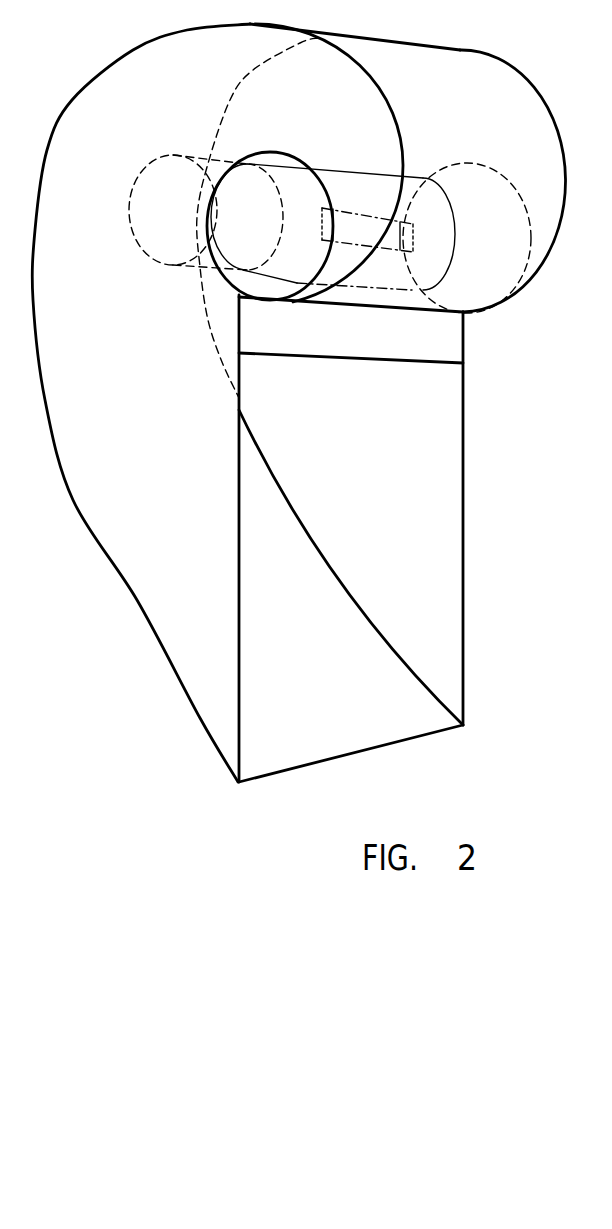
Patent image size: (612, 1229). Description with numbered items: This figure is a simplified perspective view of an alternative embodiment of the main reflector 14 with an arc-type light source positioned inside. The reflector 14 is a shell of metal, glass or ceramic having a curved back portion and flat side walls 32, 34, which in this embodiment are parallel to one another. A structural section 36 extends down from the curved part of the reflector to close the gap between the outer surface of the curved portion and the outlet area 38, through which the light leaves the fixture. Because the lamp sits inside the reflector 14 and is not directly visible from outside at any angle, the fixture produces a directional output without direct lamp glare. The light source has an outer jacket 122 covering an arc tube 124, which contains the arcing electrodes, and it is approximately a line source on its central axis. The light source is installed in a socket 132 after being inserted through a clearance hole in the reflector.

The main reflector 14 is at (430, 62).
The side wall 32 is at (163, 605).
The side wall 34 is at (447, 647).
The structural section 36 is at (445, 347).
The outlet area 38 is at (355, 511).
The outer jacket 122 is at (375, 182).
The arc tube 124 is at (393, 240).
The socket 132 is at (142, 207).